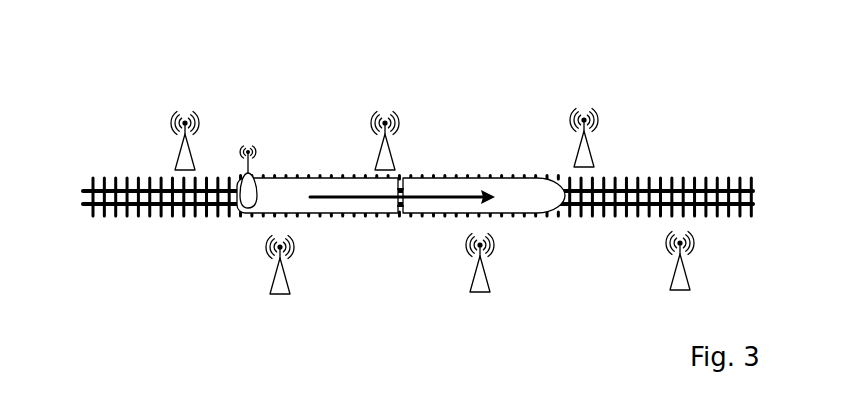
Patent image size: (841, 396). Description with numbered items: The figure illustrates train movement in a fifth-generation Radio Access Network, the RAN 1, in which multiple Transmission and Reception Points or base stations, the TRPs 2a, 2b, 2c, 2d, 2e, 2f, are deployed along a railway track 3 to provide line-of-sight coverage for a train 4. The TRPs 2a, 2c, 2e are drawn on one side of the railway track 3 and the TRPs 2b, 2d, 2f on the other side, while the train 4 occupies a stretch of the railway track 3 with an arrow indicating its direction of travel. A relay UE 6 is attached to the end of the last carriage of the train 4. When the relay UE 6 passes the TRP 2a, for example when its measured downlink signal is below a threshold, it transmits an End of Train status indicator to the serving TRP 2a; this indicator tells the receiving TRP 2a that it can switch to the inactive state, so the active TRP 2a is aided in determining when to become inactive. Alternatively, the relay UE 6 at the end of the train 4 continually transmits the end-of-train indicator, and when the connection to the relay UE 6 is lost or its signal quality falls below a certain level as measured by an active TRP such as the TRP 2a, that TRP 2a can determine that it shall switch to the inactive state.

The RAN 1 is at (141, 52).
The TRP 2a is at (193, 150).
The TRP 2b is at (288, 283).
The TRP 2c is at (393, 152).
The TRP 2d is at (490, 282).
The TRP 2e is at (592, 148).
The TRP 2f is at (688, 278).
The railway track 3 is at (690, 177).
The train 4 is at (435, 214).
The relay UE 6 is at (237, 208).